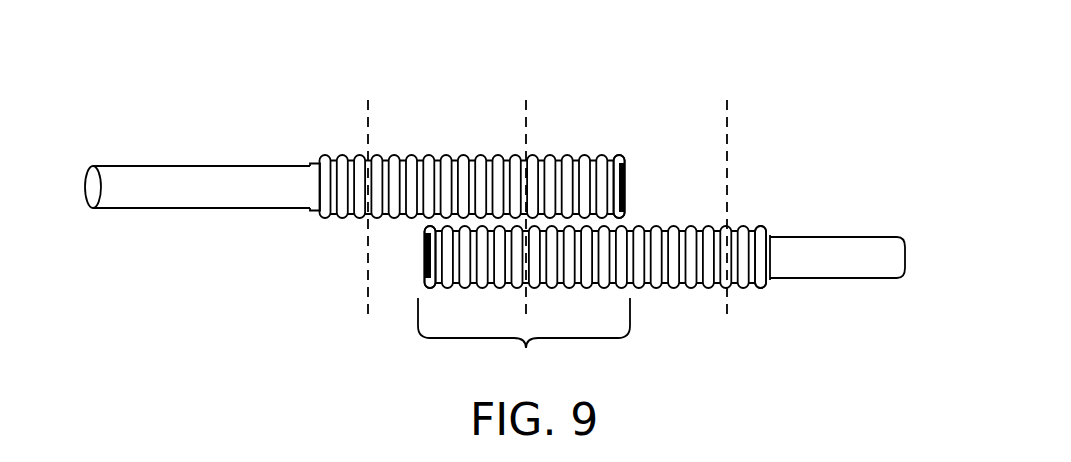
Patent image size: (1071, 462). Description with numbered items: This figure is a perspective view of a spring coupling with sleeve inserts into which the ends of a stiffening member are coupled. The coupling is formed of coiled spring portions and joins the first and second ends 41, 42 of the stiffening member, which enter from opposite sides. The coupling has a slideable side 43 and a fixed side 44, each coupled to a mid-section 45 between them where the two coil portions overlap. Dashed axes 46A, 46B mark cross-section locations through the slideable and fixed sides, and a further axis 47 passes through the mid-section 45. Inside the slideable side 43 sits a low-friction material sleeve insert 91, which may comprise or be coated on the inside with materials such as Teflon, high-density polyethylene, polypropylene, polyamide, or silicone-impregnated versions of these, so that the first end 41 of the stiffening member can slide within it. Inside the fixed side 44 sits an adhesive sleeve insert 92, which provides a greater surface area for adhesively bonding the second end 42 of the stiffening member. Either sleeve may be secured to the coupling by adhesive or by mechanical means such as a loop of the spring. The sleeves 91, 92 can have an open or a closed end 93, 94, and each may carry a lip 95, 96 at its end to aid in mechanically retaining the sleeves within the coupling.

The first end of stiffening member 41 is at (176, 165).
The second end of stiffening member 42 is at (857, 237).
The slideable side 43 is at (341, 222).
The fixed side 44 is at (765, 230).
The mid-section 45 is at (524, 337).
The axis 46A is at (358, 124).
The axis 46B is at (740, 134).
The axis 47 is at (536, 114).
The low-friction material sleeve insert 91 is at (317, 158).
The adhesive sleeve insert 92 is at (697, 288).
The end of sleeve insert 93 is at (627, 187).
The end of sleeve insert 94 is at (428, 251).
The lip 95 is at (625, 157).
The lip 96 is at (431, 279).